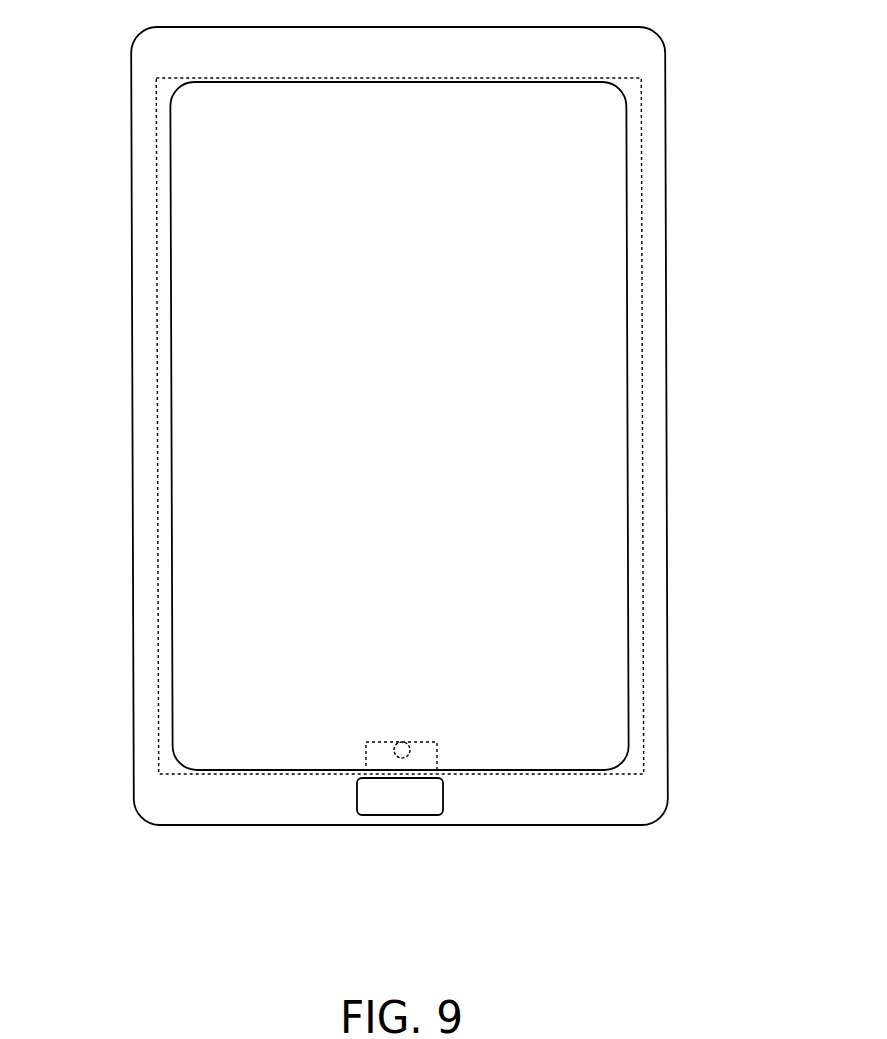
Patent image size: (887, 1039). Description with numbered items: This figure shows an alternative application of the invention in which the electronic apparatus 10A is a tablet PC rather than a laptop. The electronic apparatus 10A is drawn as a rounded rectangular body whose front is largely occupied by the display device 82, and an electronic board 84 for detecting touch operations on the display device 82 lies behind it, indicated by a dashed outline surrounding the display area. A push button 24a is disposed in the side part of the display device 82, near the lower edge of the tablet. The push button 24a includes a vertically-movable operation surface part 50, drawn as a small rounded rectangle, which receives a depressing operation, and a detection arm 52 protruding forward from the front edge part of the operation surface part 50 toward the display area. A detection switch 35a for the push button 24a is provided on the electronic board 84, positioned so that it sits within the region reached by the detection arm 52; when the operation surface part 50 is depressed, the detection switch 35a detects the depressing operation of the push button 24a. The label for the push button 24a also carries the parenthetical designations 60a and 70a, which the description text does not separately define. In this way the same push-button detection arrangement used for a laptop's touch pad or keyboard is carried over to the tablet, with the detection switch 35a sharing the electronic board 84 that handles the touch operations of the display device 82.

The electronic apparatus 10A is at (75, 73).
The display device 82 is at (600, 207).
The electronic board 84 is at (643, 605).
The detection arm 52 is at (437, 752).
The detection switch 35a is at (416, 741).
The operation surface part 50 is at (438, 794).
The push button 24a is at (396, 805).
The pressing portion 60a is at (400, 796).
The contact portion 70a is at (400, 796).